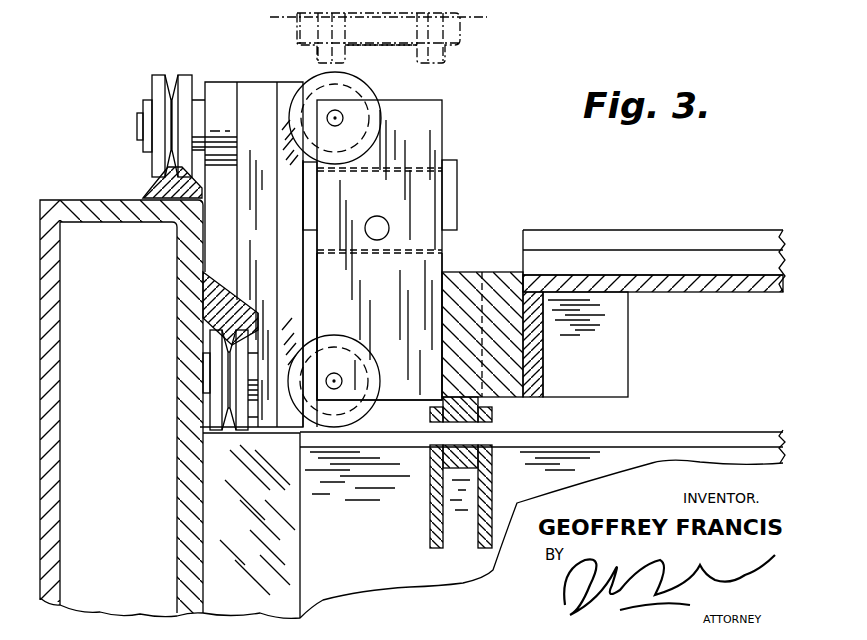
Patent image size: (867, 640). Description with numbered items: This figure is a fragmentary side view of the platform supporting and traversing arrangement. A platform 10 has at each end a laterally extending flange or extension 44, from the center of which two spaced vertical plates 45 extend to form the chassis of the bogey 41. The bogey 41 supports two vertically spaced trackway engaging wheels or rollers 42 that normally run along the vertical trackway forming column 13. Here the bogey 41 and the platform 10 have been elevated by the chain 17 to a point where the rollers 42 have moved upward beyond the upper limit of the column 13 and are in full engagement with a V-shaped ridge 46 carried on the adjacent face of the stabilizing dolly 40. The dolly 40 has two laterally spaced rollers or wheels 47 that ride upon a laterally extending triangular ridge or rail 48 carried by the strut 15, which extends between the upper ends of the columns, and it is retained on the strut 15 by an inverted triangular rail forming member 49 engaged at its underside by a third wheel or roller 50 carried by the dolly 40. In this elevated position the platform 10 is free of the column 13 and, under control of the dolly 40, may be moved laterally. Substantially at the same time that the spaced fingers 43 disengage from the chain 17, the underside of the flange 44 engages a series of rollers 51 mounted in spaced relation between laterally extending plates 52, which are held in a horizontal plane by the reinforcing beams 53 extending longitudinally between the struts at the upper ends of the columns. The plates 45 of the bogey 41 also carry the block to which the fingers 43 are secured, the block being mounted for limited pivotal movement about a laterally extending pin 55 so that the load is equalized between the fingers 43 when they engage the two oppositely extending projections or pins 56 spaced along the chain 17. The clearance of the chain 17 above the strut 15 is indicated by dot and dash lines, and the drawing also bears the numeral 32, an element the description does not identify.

The platform 10 is at (622, 257).
The vertical trackway forming column 13 is at (290, 568).
The strut 15 is at (186, 322).
The chain 17 is at (380, 40).
The bracket 32 is at (486, 496).
The stabilizing dolly 40 is at (258, 88).
The bogey 41 is at (475, 115).
The trackway engaging wheels or rollers 42 is at (320, 80).
The fingers 43 is at (310, 193).
The laterally extending flange or extension 44 is at (488, 270).
The vertical plates 45 is at (398, 336).
The V-shaped ridge 46 is at (303, 270).
The rollers or wheels 47 is at (160, 97).
The triangular ridge or rail 48 is at (150, 190).
The inverted triangular rail forming member 49 is at (225, 275).
The third wheel or roller 50 is at (215, 410).
The rollers 51 is at (463, 465).
The laterally extending plates 52 is at (437, 507).
The reinforcing beams 53 is at (612, 437).
The laterally extending pin 55 is at (380, 218).
The projections or pins 56 is at (450, 30).